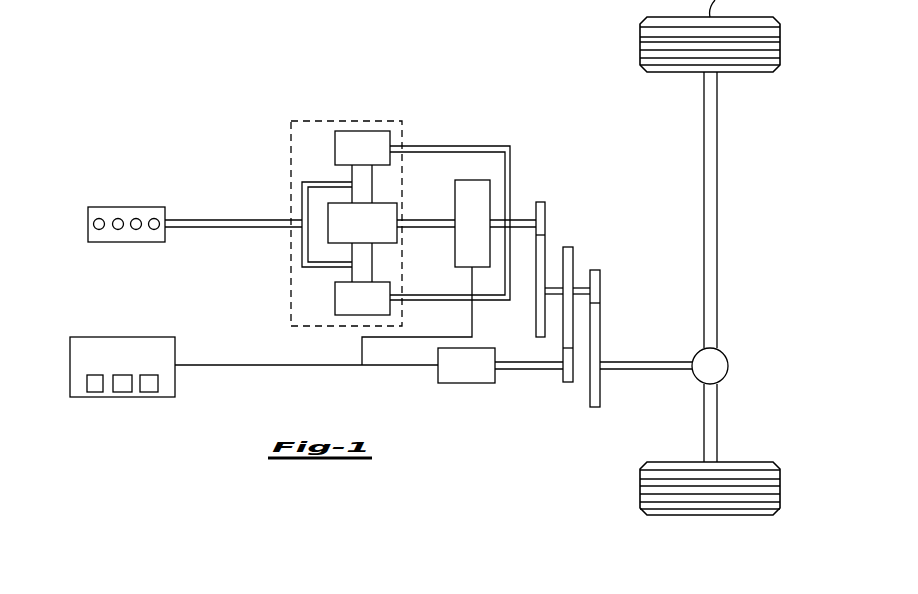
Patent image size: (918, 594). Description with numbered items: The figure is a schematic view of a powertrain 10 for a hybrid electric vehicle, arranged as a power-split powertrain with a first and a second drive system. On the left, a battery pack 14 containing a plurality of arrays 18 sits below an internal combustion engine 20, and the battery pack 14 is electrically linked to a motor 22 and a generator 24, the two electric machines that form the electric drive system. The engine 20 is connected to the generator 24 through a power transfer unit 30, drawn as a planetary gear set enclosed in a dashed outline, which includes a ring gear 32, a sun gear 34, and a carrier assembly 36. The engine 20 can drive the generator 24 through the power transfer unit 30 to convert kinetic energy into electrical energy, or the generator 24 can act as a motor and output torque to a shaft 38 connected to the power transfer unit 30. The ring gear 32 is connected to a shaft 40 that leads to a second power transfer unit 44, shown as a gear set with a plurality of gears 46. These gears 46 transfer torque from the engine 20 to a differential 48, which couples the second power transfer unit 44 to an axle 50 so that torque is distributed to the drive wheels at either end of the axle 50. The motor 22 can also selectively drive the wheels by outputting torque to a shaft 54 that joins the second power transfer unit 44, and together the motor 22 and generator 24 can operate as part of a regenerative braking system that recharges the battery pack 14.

The powertrain 10 is at (165, 56).
The battery pack 14 is at (122, 337).
The arrays 18 is at (95, 392).
The internal combustion engine 20 is at (92, 207).
The motor 22 is at (467, 383).
The generator 24 is at (490, 190).
The power transfer unit 30 is at (402, 121).
The ring gear 32 is at (335, 148).
The sun gear 34 is at (385, 243).
The carrier assembly 36 is at (302, 207).
The shaft 38 is at (428, 220).
The shaft 40 is at (525, 232).
The second power transfer unit 44 is at (613, 220).
The gears 46 is at (545, 217).
The differential 48 is at (728, 366).
The axle 50 is at (717, 213).
The shaft 54 is at (530, 370).